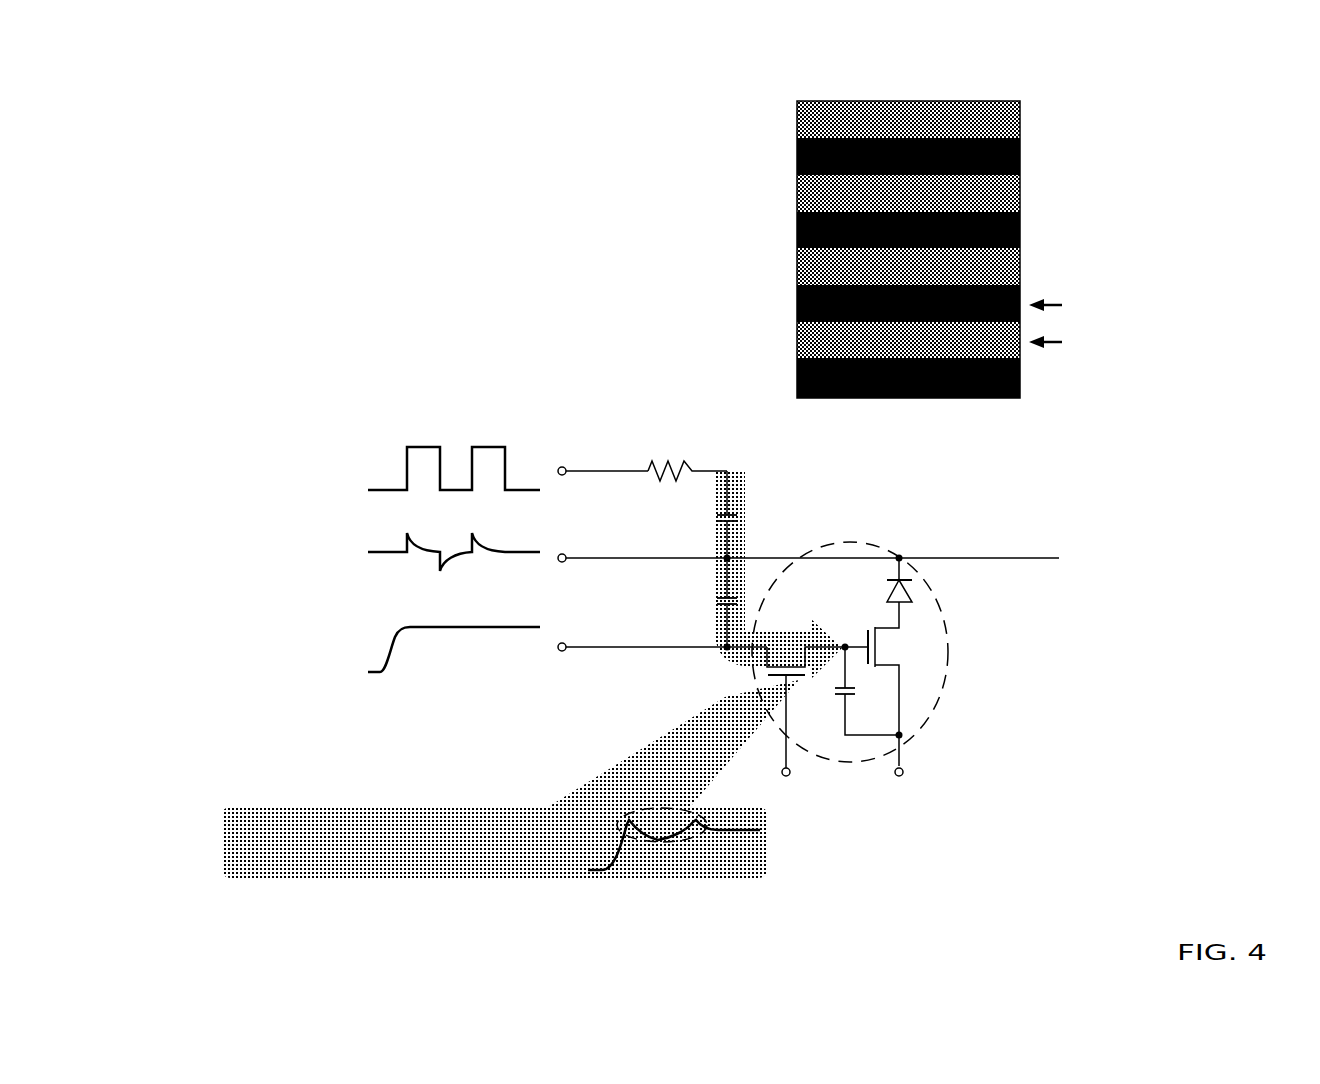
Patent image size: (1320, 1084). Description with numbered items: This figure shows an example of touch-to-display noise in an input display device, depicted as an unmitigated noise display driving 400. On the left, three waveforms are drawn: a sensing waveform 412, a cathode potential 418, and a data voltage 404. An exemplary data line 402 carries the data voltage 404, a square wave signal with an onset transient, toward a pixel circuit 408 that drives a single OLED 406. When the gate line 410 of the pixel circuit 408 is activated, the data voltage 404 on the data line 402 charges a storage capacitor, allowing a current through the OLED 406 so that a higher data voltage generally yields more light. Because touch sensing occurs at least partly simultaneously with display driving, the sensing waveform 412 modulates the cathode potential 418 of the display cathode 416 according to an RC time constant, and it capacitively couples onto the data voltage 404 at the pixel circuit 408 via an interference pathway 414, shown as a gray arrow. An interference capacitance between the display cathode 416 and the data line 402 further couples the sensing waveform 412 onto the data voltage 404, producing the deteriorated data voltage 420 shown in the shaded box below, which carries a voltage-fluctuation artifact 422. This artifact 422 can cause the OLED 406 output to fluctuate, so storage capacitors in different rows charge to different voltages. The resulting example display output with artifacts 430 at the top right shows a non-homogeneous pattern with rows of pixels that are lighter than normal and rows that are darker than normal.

The unmitigated noise display driving 400 is at (753, 126).
The example display output with artifacts 430 is at (1018, 100).
The sensing waveform 412 is at (316, 468).
The cathode potential 418 is at (321, 552).
The data voltage 404 is at (348, 644).
The interference pathway 414 is at (727, 493).
The display cathode 416 is at (1019, 561).
The data line 402 is at (595, 648).
The pixel circuit 408 is at (923, 724).
The OLED 406 is at (912, 602).
The gate line 410 is at (789, 777).
The deteriorated data voltage 420 is at (494, 842).
The artifact on the data voltage 422 is at (647, 842).